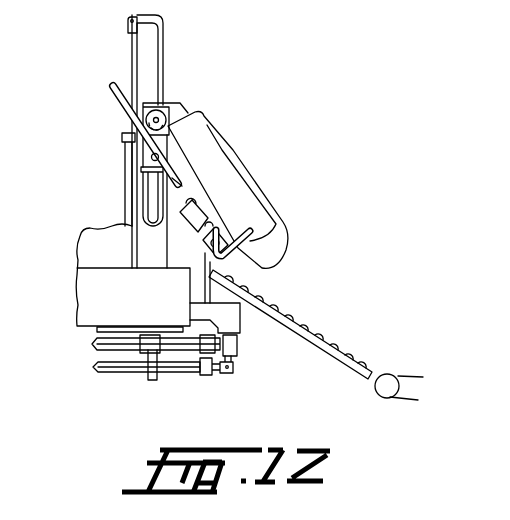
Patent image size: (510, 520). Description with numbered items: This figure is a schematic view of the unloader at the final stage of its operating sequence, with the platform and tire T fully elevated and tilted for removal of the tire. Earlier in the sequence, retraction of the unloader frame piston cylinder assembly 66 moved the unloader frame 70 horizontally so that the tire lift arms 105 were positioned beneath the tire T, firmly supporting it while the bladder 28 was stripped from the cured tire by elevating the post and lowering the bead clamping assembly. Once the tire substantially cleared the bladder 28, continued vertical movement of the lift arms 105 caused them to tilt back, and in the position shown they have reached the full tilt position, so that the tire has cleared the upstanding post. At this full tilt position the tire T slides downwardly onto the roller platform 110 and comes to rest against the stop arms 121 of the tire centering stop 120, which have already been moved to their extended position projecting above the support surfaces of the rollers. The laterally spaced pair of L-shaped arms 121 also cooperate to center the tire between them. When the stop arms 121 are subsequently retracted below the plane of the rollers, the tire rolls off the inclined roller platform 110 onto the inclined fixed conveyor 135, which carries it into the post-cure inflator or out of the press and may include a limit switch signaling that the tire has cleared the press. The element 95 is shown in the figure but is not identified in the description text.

The bladder 28 is at (90, 240).
The unloader frame piston cylinder assembly 66 is at (175, 371).
The unloader frame 70 is at (177, 103).
The guide bar 95 is at (127, 157).
The tire lift arms 105 is at (110, 100).
The roller platform 110 is at (197, 232).
The tire centering stop 120 is at (230, 258).
The L-shape stop arms 121 is at (252, 240).
The inclined fixed conveyor 135 is at (313, 343).
The tire T is at (251, 178).